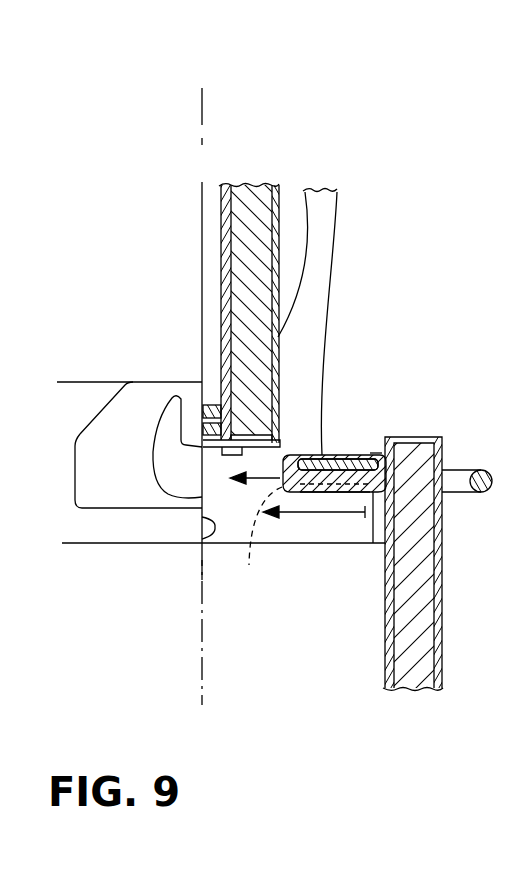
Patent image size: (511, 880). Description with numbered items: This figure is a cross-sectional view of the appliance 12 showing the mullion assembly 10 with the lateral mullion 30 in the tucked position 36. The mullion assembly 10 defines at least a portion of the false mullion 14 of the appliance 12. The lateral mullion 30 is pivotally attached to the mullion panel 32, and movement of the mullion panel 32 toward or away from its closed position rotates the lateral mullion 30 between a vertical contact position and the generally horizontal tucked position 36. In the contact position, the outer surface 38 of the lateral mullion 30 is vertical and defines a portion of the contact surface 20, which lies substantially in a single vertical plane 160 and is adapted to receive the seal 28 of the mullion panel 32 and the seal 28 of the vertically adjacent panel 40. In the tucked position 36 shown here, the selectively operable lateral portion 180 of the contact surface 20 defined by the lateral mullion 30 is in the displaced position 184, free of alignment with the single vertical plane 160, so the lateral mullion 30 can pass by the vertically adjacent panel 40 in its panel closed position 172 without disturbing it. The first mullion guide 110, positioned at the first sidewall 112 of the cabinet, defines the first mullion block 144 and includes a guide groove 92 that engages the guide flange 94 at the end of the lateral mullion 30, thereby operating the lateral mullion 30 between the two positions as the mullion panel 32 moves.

The mullion assembly 10 is at (176, 596).
The appliance 12 is at (170, 185).
The false mullion 14 is at (127, 522).
The contact surface 20 is at (205, 538).
The seal 28 is at (216, 406).
The lateral mullion 30 is at (370, 440).
The mullion panel 32 is at (443, 660).
The tucked position 36 is at (321, 544).
The outer surface 38 is at (344, 431).
The vertically adjacent panel 40 is at (280, 203).
The guide groove 92 is at (162, 463).
The guide flange 94 is at (262, 552).
The first mullion guide 110 is at (154, 366).
The first sidewall 112 is at (122, 380).
The first mullion block 144 is at (72, 472).
The single vertical plane 160 is at (200, 648).
The panel closed position 172 is at (287, 233).
The selectively operable lateral portion 180 is at (386, 436).
The displaced position 184 is at (367, 503).